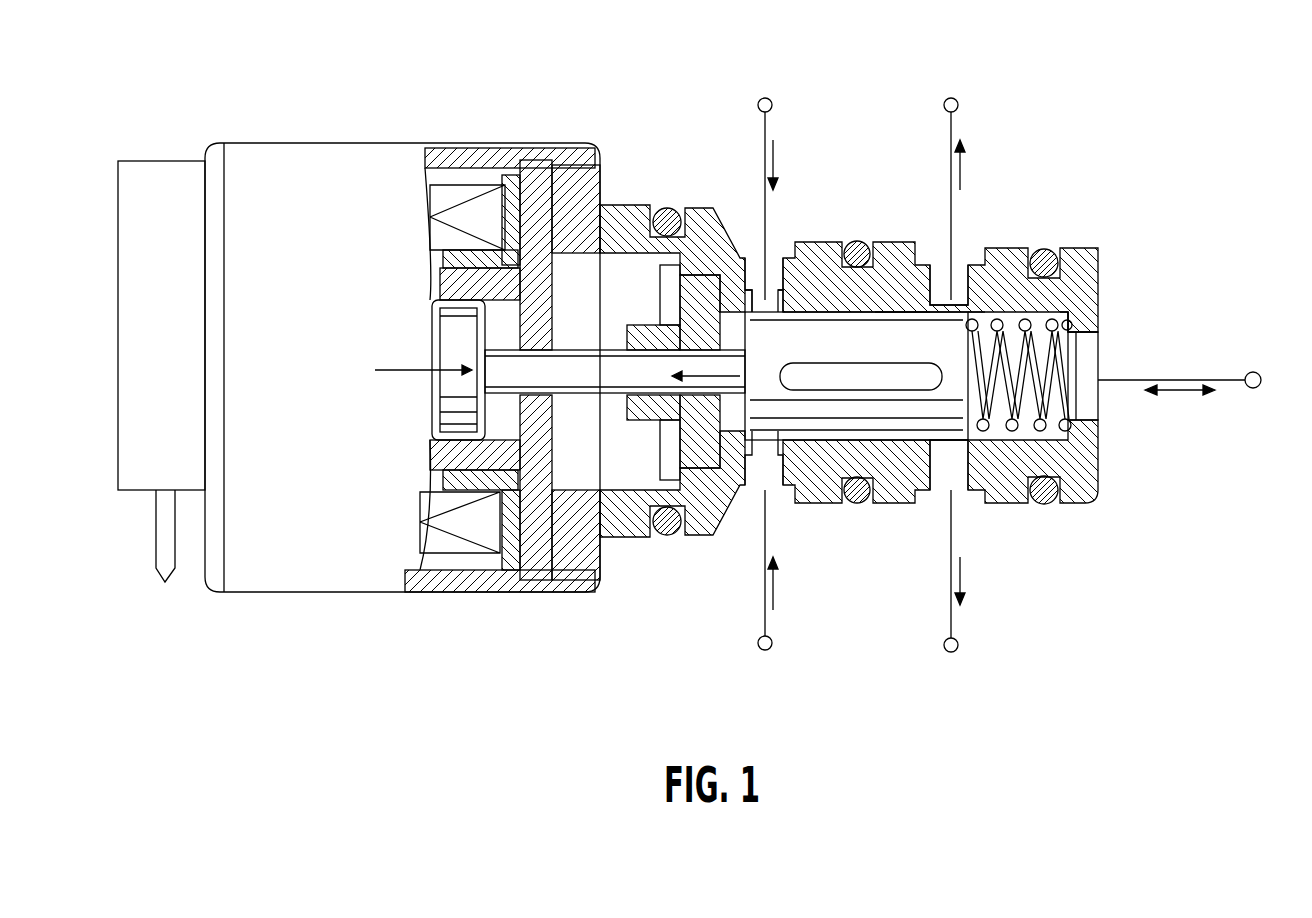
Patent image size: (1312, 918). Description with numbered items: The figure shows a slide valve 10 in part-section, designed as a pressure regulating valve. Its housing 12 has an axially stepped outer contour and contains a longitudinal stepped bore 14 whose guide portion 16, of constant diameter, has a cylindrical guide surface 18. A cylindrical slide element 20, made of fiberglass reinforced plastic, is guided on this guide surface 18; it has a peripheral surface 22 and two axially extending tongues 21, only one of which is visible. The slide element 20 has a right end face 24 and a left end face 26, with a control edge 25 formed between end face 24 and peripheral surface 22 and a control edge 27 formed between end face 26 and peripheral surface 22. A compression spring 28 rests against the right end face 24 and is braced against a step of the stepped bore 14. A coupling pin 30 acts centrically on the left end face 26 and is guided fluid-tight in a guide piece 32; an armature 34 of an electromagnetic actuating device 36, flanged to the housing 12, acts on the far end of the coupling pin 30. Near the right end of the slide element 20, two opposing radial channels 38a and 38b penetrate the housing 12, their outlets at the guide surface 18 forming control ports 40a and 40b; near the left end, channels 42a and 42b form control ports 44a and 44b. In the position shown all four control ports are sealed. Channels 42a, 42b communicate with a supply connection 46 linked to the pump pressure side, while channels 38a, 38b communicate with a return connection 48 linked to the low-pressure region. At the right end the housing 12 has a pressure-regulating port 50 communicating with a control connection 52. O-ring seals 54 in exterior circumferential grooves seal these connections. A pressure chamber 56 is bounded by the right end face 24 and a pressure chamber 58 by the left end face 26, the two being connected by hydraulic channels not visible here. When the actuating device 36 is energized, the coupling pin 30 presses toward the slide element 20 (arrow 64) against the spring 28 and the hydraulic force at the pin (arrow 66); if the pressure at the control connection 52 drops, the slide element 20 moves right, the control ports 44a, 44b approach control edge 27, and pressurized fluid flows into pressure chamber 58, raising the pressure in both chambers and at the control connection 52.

The slide valve 10 is at (1200, 175).
The housing 12 is at (707, 543).
The stepped bore 14 is at (643, 487).
The guide portion 16 is at (1076, 336).
The guide surface 18 is at (808, 312).
The slide element 20 is at (852, 349).
The tongue 21 is at (858, 385).
The peripheral surface 22 is at (900, 310).
The right end face 24 is at (1003, 440).
The control edge 25 is at (988, 300).
The left end face 26 is at (745, 300).
The control edge 27 is at (760, 290).
The compression spring 28 is at (1062, 314).
The coupling pin 30 is at (582, 350).
The guide piece 32 is at (645, 300).
The armature 34 is at (440, 326).
The electromagnetic actuating device 36 is at (356, 170).
The channel 38a is at (937, 492).
The channel 38b is at (940, 265).
The control port 40a is at (980, 581).
The control port 40b is at (980, 149).
The channel 42a is at (752, 487).
The channel 42b is at (752, 258).
The control port 44a is at (794, 583).
The control port 44b is at (794, 149).
The supply connection 46 is at (768, 98).
The return connection 48 is at (951, 98).
The pressure-regulating port 50 is at (1080, 398).
The control connection 52 is at (1253, 372).
The O-ring seal 54 is at (667, 207).
The pressure chamber 56 is at (1058, 505).
The pressure chamber 58 is at (688, 445).
The arrow 64 is at (392, 380).
The arrow 66 is at (680, 405).